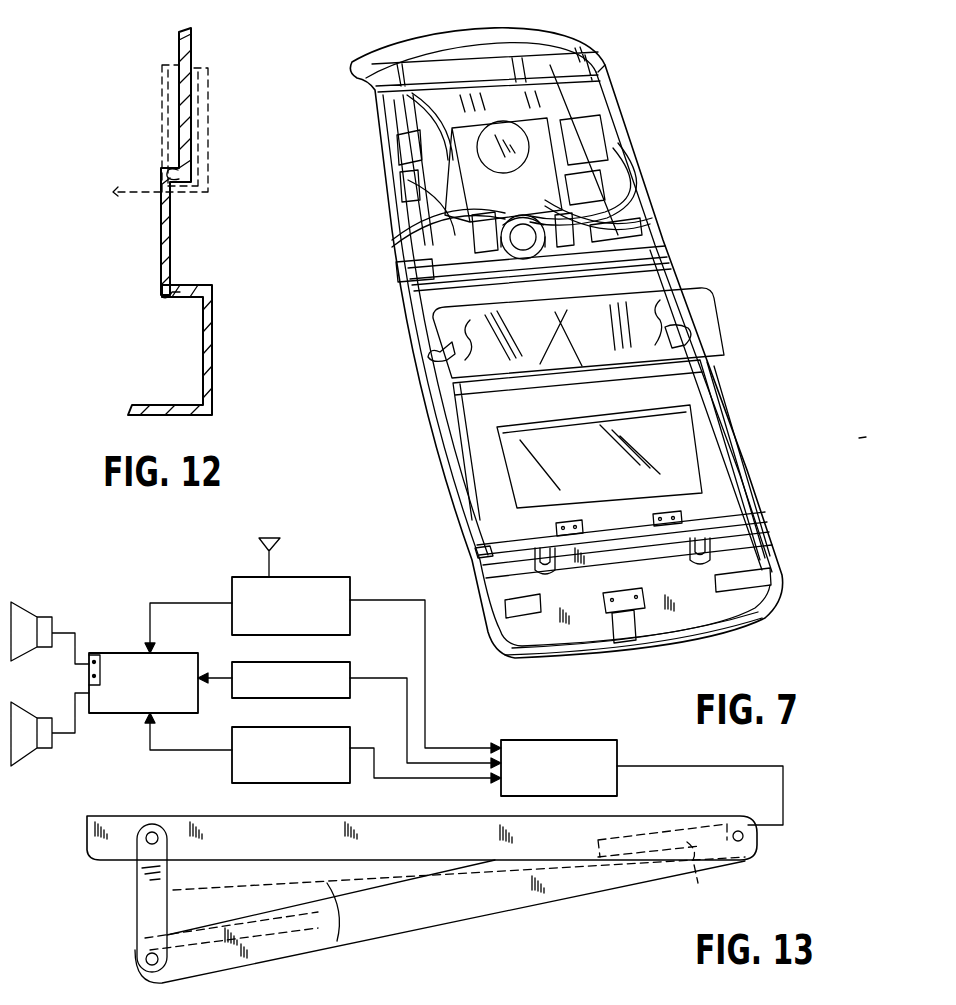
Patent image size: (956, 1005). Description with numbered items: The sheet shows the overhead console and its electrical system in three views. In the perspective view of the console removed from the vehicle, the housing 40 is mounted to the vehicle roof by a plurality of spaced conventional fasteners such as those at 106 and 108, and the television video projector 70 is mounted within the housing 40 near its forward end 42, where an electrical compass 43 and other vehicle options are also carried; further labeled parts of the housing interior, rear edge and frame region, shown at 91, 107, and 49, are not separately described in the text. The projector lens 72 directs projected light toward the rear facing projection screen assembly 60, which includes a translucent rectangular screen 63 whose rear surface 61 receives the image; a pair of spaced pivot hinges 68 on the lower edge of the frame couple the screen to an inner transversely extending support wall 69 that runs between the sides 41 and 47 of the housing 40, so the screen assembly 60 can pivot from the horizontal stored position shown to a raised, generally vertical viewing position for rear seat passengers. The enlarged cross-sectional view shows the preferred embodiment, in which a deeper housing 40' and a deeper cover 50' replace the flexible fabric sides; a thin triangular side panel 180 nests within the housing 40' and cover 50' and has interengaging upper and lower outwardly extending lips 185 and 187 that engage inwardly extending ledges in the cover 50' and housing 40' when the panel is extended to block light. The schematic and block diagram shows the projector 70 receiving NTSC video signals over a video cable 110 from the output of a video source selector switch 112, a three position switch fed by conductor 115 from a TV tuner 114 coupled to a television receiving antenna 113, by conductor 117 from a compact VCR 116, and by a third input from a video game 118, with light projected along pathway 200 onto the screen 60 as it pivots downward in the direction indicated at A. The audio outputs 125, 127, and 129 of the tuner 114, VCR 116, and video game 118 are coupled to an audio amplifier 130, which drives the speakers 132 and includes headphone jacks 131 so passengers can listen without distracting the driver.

In FIG. 12, the housing 40' is at (183, 120).
In FIG. 12, the triangular side panel 180 is at (172, 103).
In FIG. 12, the upper outwardly extending lip 185 is at (168, 169).
In FIG. 12, the cover 50' is at (201, 269).
In FIG. 12, the lower outwardly extending lip 187 is at (180, 298).
In FIG. 7, the housing 40 is at (566, 343).
In FIG. 13, the housing 40 is at (398, 857).
In FIG. 7, the electrical compass 43 is at (500, 62).
In FIG. 7, the forward end 42 is at (606, 66).
In FIG. 7, the video projector 70 is at (616, 149).
In FIG. 13, the video projector 70 is at (670, 867).
In FIG. 7, the side of housing 41 is at (650, 213).
In FIG. 7, the side of housing 47 is at (400, 268).
In FIG. 7, the lens 72 is at (521, 243).
In FIG. 7, the wiring harness 91 is at (558, 338).
In FIG. 7, the fastener 108 is at (684, 331).
In FIG. 7, the fastener 106 is at (437, 354).
In FIG. 7, the projection screen assembly 60 is at (666, 398).
In FIG. 13, the projection screen assembly 60 is at (137, 905).
In FIG. 7, the projection screen 63 is at (682, 447).
In FIG. 7, the rear surface 61 is at (568, 457).
In FIG. 7, the pivot hinge 68 is at (576, 521).
In FIG. 7, the support wall 69 is at (535, 553).
In FIG. 7, the latch mechanism 107 is at (712, 542).
In FIG. 7, the front lip 49 is at (720, 637).
In FIG. 13, the audio amplifier 130 is at (140, 653).
In FIG. 13, the headphone jack 131 is at (94, 658).
In FIG. 13, the speaker 132 is at (25, 613).
In FIG. 13, the TV tuner 114 is at (325, 576).
In FIG. 13, the television receiving antenna 113 is at (276, 545).
In FIG. 13, the audio output 125 is at (207, 603).
In FIG. 13, the VCR 116 is at (325, 660).
In FIG. 13, the audio output 127 is at (215, 675).
In FIG. 13, the video game 118 is at (333, 727).
In FIG. 13, the audio output 129 is at (215, 750).
In FIG. 13, the conductor 115 is at (385, 594).
In FIG. 13, the conductor 117 is at (368, 678).
In FIG. 13, the video source selector switch 112 is at (592, 738).
In FIG. 13, the video cable 110 is at (708, 765).
In FIG. 13, the projected light pathway 200 is at (338, 942).
In FIG. 13, the pivot direction A is at (247, 870).